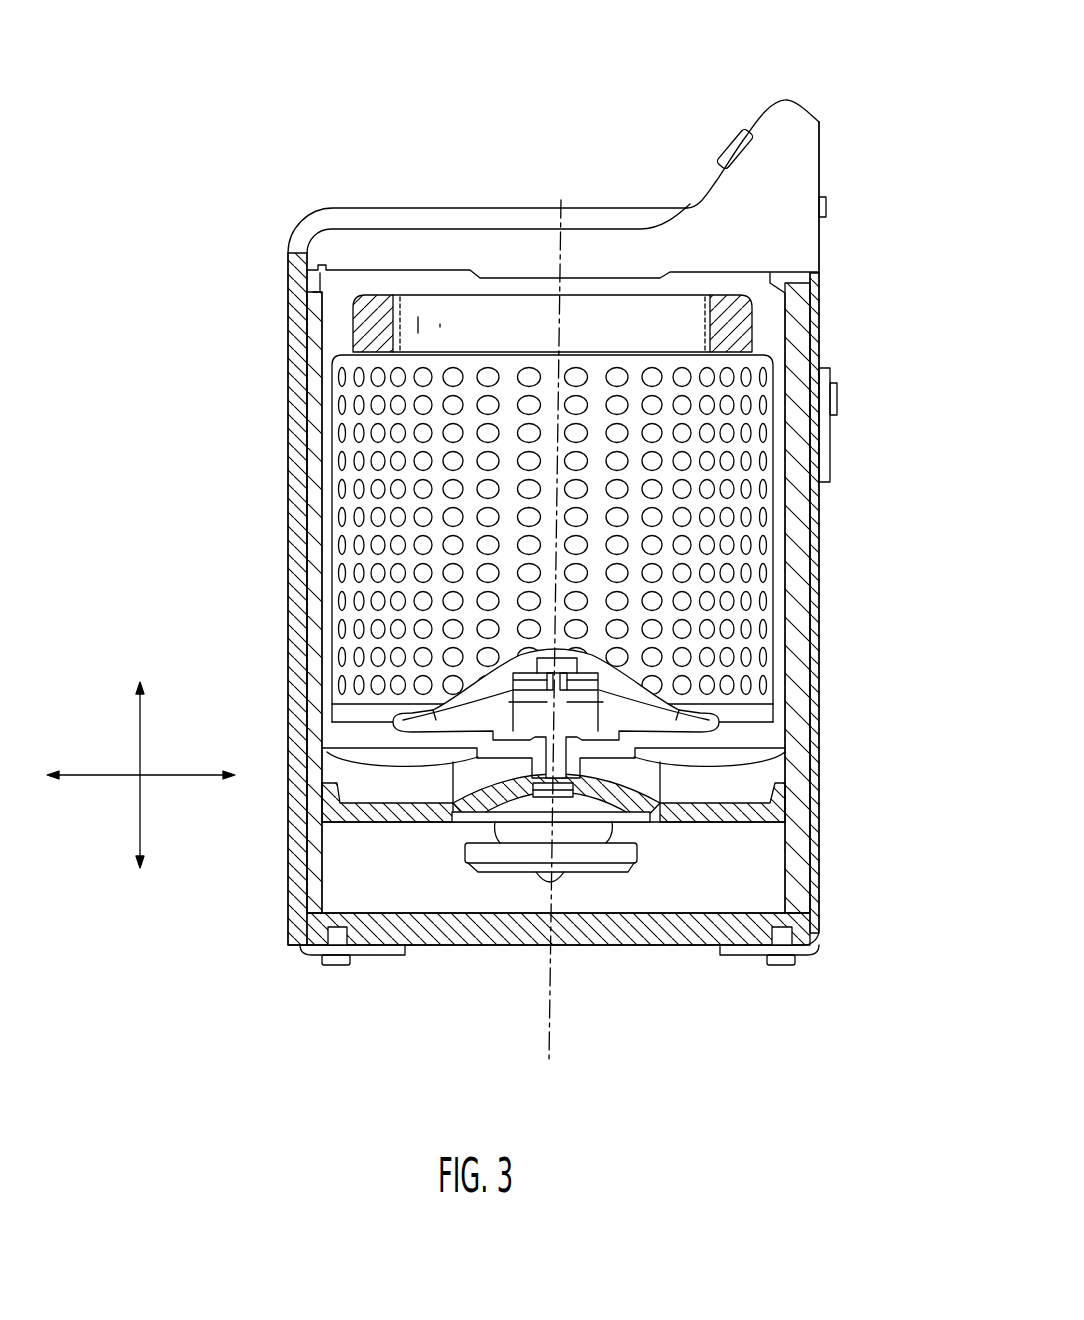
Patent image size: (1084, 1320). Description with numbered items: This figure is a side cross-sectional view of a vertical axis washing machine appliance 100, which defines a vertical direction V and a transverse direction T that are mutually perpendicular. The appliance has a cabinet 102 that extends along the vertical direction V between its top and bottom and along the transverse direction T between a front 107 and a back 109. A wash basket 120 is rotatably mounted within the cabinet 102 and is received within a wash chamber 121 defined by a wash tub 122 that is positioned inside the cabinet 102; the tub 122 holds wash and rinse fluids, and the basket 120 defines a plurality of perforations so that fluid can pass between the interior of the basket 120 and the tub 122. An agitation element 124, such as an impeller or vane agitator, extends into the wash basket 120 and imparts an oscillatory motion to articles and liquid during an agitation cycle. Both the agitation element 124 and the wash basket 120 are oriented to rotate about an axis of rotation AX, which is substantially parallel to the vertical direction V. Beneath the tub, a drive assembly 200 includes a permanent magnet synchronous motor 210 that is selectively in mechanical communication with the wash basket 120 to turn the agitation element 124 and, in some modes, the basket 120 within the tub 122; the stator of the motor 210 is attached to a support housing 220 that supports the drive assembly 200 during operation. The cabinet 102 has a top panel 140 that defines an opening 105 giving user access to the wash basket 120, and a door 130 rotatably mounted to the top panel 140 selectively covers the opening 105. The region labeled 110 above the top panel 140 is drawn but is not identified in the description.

The washing machine appliance 100 is at (288, 84).
The cabinet 102 is at (819, 555).
The opening 105 is at (578, 318).
The front 107 is at (300, 986).
The back 109 is at (806, 981).
The backsplash 110 is at (796, 130).
The wash basket 120 is at (372, 462).
The wash chamber 121 is at (324, 562).
The wash tub 122 is at (318, 435).
The agitation element 124 is at (782, 742).
The door 130 is at (645, 212).
The top panel 140 is at (760, 228).
The drive assembly 200 is at (648, 880).
The motor 210 is at (466, 850).
The support housing 220 is at (628, 822).
The axis of rotation AX is at (567, 647).
The vertical direction V is at (138, 730).
The transverse direction T is at (105, 777).